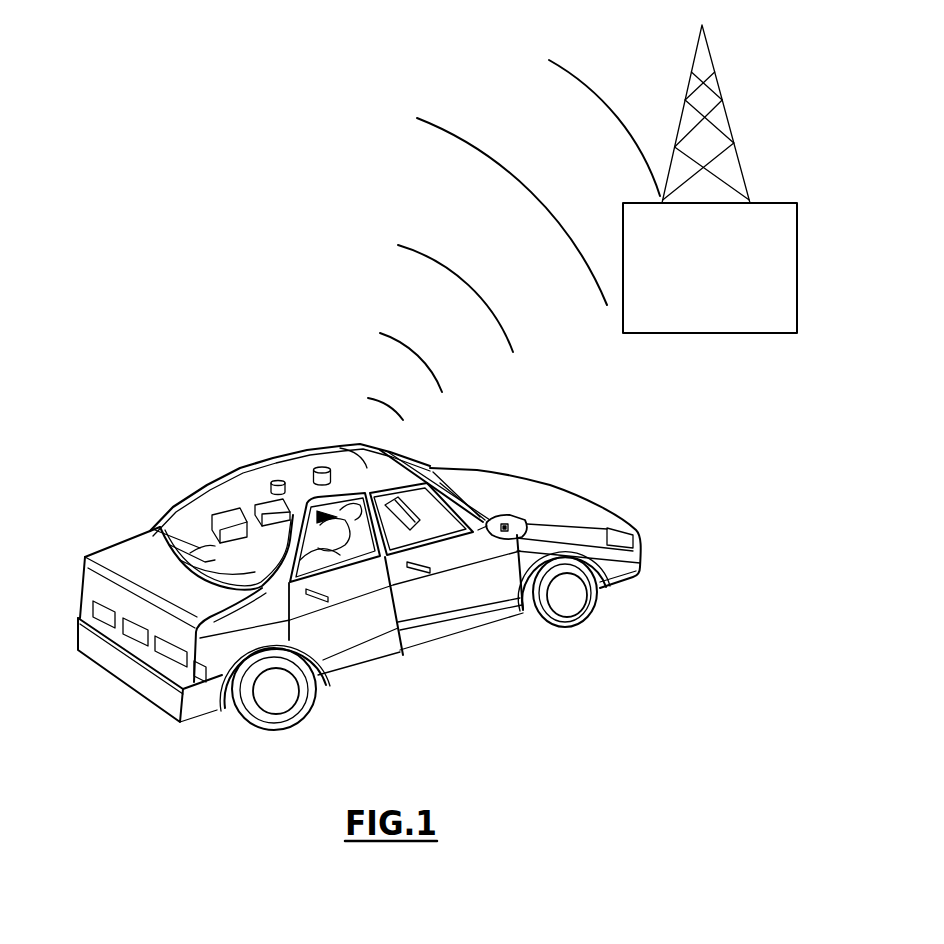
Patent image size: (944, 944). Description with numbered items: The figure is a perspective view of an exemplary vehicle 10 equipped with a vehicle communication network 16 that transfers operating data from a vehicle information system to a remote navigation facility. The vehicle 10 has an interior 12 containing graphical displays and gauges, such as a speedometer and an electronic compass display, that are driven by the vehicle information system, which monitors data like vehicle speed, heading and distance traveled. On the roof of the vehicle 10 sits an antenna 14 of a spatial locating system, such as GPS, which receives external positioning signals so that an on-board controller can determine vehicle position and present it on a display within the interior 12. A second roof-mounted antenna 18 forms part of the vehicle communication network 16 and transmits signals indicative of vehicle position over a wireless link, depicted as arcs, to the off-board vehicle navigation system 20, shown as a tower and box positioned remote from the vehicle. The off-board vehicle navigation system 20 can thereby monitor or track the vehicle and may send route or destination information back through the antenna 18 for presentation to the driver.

The vehicle 10 is at (197, 344).
The interior 12 is at (250, 490).
The antenna 14 is at (283, 480).
The vehicle communication network 16 is at (373, 223).
The antenna 18 is at (318, 467).
The off-board vehicle navigation system 20 is at (797, 263).